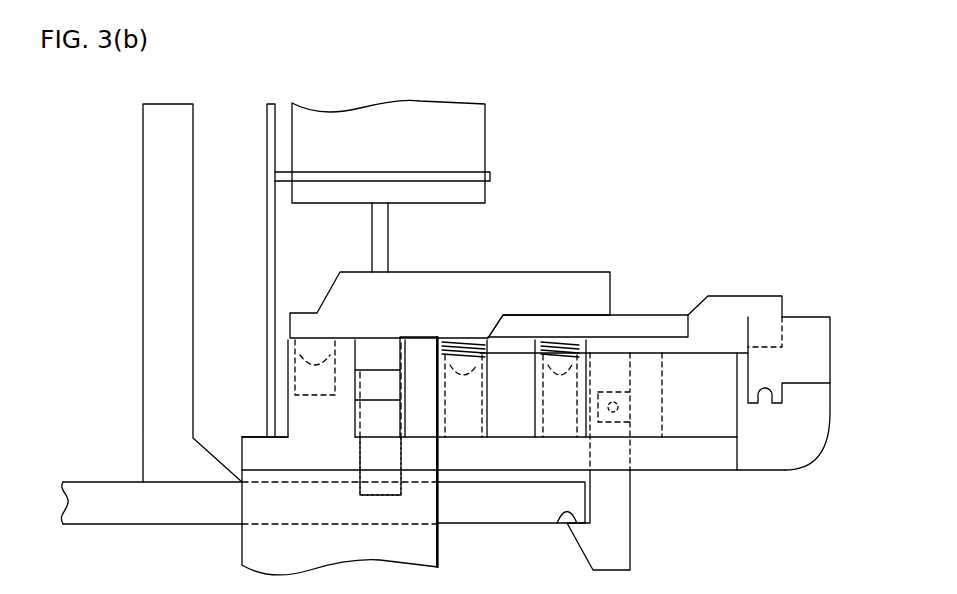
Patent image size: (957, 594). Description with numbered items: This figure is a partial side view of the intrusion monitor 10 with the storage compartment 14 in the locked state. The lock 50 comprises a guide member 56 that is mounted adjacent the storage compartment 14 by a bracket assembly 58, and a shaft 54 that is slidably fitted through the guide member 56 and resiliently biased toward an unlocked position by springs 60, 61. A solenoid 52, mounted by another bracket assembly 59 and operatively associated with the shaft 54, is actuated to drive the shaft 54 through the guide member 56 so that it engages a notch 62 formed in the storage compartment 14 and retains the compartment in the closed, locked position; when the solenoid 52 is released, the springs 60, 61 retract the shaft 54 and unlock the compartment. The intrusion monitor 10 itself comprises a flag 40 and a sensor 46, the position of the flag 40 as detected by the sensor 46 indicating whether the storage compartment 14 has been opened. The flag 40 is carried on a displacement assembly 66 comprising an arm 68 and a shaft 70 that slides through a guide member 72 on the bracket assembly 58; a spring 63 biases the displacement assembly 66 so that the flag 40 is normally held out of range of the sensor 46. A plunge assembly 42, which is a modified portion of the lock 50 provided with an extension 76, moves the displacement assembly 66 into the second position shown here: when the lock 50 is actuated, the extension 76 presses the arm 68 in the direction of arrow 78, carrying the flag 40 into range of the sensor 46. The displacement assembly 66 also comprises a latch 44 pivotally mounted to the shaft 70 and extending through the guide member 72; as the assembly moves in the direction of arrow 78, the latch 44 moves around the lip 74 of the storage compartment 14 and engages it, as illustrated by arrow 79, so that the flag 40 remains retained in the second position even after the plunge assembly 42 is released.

The intrusion monitor 10 is at (552, 130).
The storage compartment 14 is at (95, 526).
The flag 40 is at (782, 304).
The plunge assembly 42 is at (553, 260).
The latch 44 is at (630, 537).
The sensor 46 is at (822, 383).
The lock 50 is at (443, 297).
The solenoid 52 is at (433, 147).
The shaft 54 is at (399, 426).
The guide member 56 is at (337, 457).
The bracket assembly 58 is at (242, 545).
The bracket assembly 59 is at (267, 142).
The spring 60 is at (332, 340).
The spring 61 is at (446, 342).
The notch 62 is at (357, 497).
The spring 63 is at (537, 341).
The displacement assembly 66 is at (682, 302).
The arm 68 is at (614, 315).
The shaft 70 is at (645, 422).
The guide member 72 is at (737, 416).
The lip 74 is at (562, 512).
The extension 76 is at (583, 290).
The arrow 78 is at (685, 228).
The arrow 79 is at (665, 572).